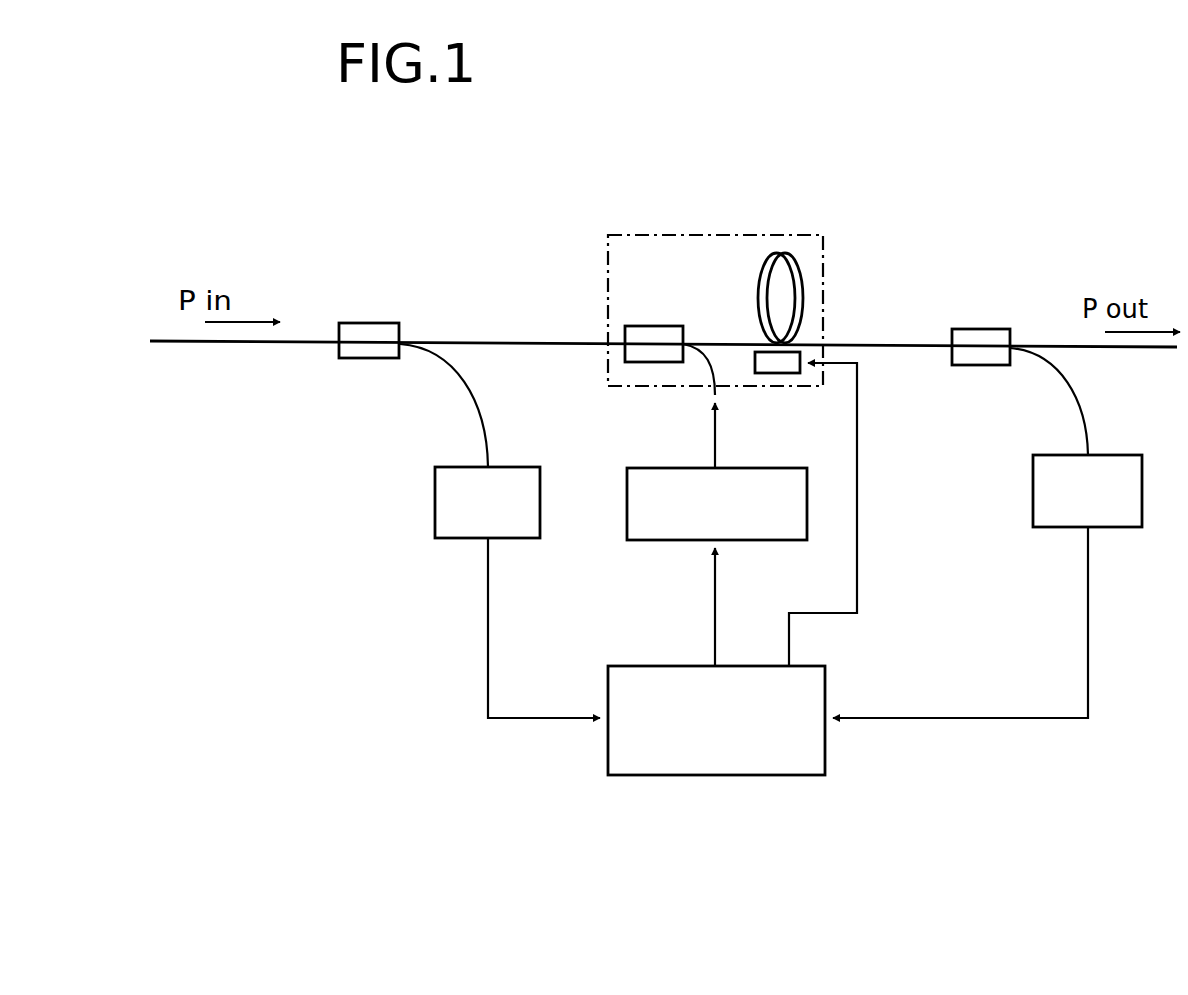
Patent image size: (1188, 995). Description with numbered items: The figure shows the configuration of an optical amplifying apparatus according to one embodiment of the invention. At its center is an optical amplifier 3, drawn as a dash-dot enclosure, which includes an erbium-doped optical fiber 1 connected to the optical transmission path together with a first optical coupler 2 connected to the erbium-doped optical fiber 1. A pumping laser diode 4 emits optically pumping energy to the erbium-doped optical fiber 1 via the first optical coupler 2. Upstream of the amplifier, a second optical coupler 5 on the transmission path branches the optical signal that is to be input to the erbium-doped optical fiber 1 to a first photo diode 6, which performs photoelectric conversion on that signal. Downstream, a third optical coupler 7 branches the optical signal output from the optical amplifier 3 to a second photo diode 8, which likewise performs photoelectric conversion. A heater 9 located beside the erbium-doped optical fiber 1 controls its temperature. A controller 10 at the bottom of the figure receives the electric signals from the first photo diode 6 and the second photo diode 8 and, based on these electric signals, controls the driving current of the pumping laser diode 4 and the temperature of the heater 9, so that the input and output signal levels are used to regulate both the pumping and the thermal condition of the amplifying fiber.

The erbium-doped optical fiber 1 is at (793, 272).
The first optical coupler 2 is at (643, 348).
The optical amplifier 3 is at (823, 303).
The pumping laser diode 4 is at (627, 518).
The second optical coupler 5 is at (366, 335).
The first photo diode 6 is at (435, 505).
The third optical coupler 7 is at (977, 337).
The second photo diode 8 is at (1033, 473).
The heater 9 is at (780, 373).
The controller 10 is at (718, 775).